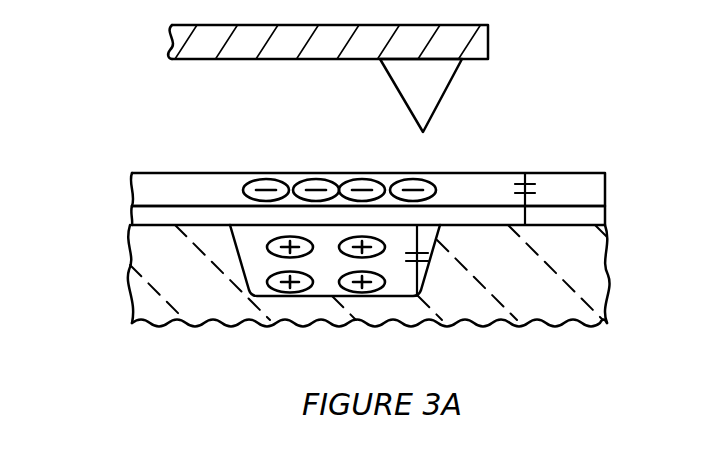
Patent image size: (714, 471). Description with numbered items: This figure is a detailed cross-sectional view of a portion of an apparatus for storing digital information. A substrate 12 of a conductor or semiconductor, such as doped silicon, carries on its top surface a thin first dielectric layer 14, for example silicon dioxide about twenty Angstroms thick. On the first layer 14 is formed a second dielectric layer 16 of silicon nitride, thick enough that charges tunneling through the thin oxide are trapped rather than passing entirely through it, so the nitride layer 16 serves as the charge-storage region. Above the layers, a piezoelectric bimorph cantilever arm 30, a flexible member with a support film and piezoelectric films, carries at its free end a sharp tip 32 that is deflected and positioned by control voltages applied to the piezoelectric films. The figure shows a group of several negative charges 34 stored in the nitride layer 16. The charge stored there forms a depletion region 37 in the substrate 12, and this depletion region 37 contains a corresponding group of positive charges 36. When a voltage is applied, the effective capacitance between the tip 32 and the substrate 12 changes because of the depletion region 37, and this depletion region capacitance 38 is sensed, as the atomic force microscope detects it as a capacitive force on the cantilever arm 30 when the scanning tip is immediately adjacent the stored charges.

The piezoelectric bimorph cantilever arm 30 is at (488, 42).
The sharp tip 32 is at (434, 113).
The negative charges 34 is at (368, 173).
The second dielectric layer 16 is at (130, 195).
The first dielectric layer 14 is at (128, 212).
The substrate 12 is at (127, 288).
The depletion region 37 is at (243, 262).
The positive charges 36 is at (314, 285).
The depletion region capacitance 38 is at (438, 252).